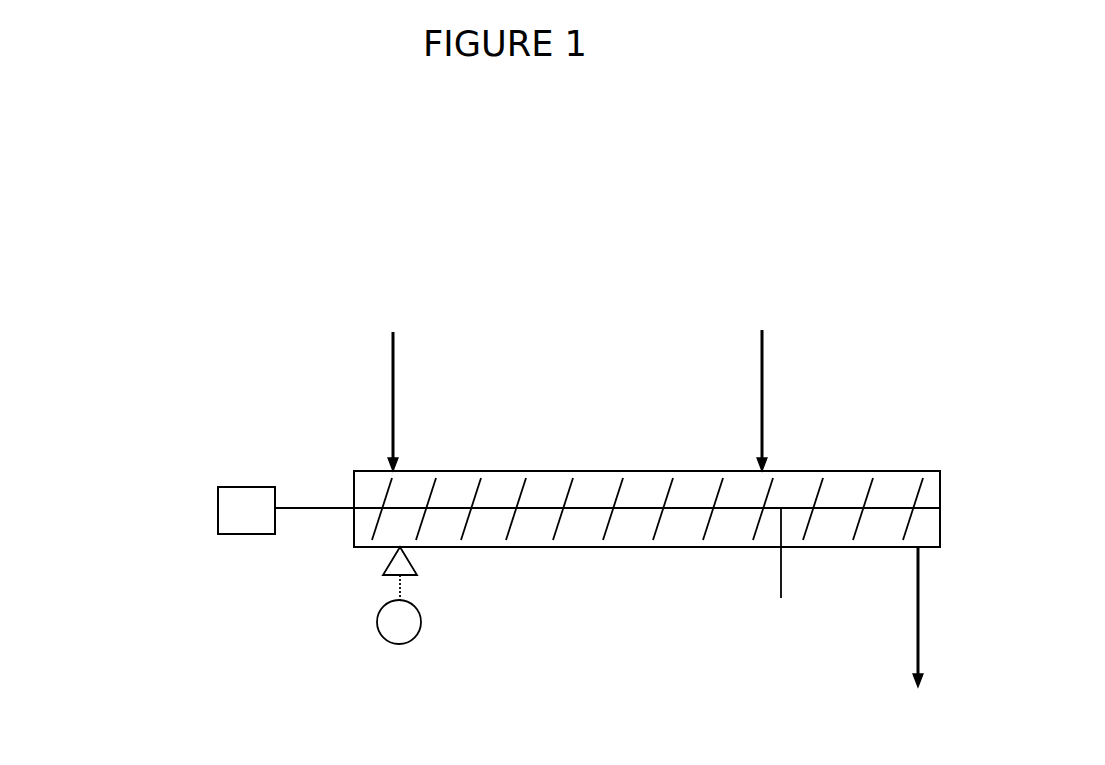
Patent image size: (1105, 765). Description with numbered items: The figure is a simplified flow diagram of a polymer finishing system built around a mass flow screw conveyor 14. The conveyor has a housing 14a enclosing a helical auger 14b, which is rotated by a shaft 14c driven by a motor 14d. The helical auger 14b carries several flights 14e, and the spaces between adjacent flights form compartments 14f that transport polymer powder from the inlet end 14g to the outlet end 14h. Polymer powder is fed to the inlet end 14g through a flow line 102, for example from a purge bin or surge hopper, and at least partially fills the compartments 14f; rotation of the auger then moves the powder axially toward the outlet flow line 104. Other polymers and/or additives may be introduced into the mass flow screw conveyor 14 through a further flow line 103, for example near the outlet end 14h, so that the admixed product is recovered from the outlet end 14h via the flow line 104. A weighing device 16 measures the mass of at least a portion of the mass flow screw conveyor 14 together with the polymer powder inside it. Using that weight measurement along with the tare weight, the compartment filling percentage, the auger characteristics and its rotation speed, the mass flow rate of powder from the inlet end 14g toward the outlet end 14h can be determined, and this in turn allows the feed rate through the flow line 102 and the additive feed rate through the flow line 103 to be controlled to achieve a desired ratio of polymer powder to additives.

The mass flow screw conveyor 14 is at (949, 448).
The housing 14a is at (540, 547).
The helical auger 14b is at (778, 573).
The shaft 14c is at (340, 510).
The motor 14d is at (218, 510).
The flights 14e is at (718, 490).
The compartments 14f is at (626, 543).
The inlet end 14g is at (335, 457).
The outlet end 14h is at (963, 540).
The weighing device 16 is at (388, 640).
The flow line 102 is at (390, 390).
The flow line 103 is at (762, 373).
The flow line 104 is at (922, 628).